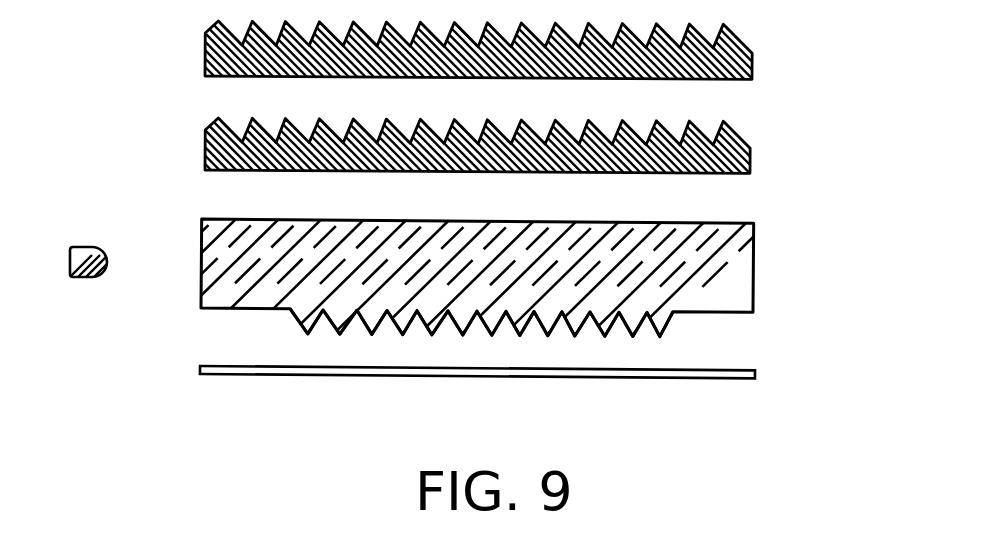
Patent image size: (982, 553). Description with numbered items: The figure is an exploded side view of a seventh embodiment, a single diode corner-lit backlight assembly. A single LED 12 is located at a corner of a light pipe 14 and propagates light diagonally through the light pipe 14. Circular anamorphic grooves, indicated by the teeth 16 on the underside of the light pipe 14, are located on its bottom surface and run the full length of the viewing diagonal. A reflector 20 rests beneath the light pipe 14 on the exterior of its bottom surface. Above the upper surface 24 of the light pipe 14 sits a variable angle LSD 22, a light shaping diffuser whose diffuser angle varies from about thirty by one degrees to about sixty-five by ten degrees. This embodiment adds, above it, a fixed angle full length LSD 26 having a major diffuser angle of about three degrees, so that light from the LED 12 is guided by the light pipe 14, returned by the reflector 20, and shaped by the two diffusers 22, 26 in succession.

The LED 12 is at (102, 246).
The light pipe 14 is at (737, 264).
The teeth 16 is at (637, 332).
The reflector 20 is at (685, 380).
The LSD 22 is at (752, 152).
The top surface of body 24 is at (213, 220).
The fixed angle full length LSD 26 is at (752, 58).